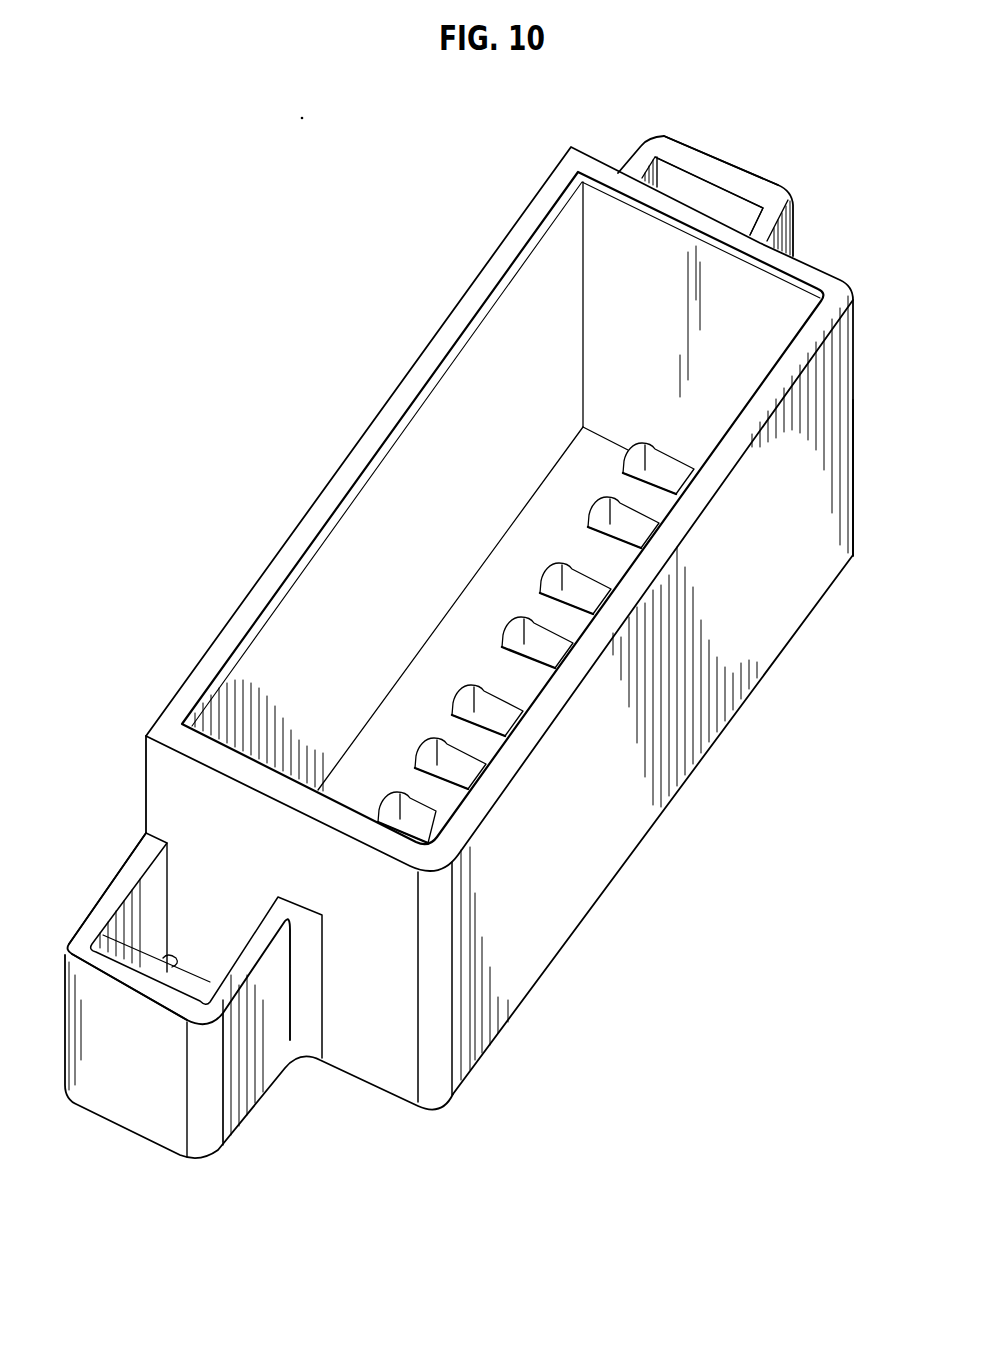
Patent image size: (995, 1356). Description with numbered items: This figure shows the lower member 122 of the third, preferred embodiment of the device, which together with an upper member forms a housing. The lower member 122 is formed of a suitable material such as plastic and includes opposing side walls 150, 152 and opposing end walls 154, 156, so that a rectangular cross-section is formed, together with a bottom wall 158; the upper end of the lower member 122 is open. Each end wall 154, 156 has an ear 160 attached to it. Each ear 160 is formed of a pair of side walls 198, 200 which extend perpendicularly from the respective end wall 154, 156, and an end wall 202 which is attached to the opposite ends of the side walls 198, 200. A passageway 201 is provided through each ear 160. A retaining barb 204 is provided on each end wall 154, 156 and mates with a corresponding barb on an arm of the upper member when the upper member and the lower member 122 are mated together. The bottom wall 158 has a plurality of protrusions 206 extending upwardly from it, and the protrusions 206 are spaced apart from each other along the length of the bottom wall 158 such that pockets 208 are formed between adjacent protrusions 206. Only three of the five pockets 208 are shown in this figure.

The lower member 122 is at (709, 712).
The side wall 150 is at (499, 624).
The side wall 152 is at (653, 695).
The end wall 154 is at (286, 947).
The end wall 156 is at (731, 332).
The bottom wall 158 is at (389, 609).
The ear 160 is at (675, 137).
The side wall 198 is at (539, 658).
The side wall 200 is at (423, 523).
The passageway 201 is at (427, 530).
The end wall 202 is at (446, 659).
The retaining barb 204 is at (116, 921).
The protrusion 206 is at (399, 581).
The pocket 208 is at (451, 497).